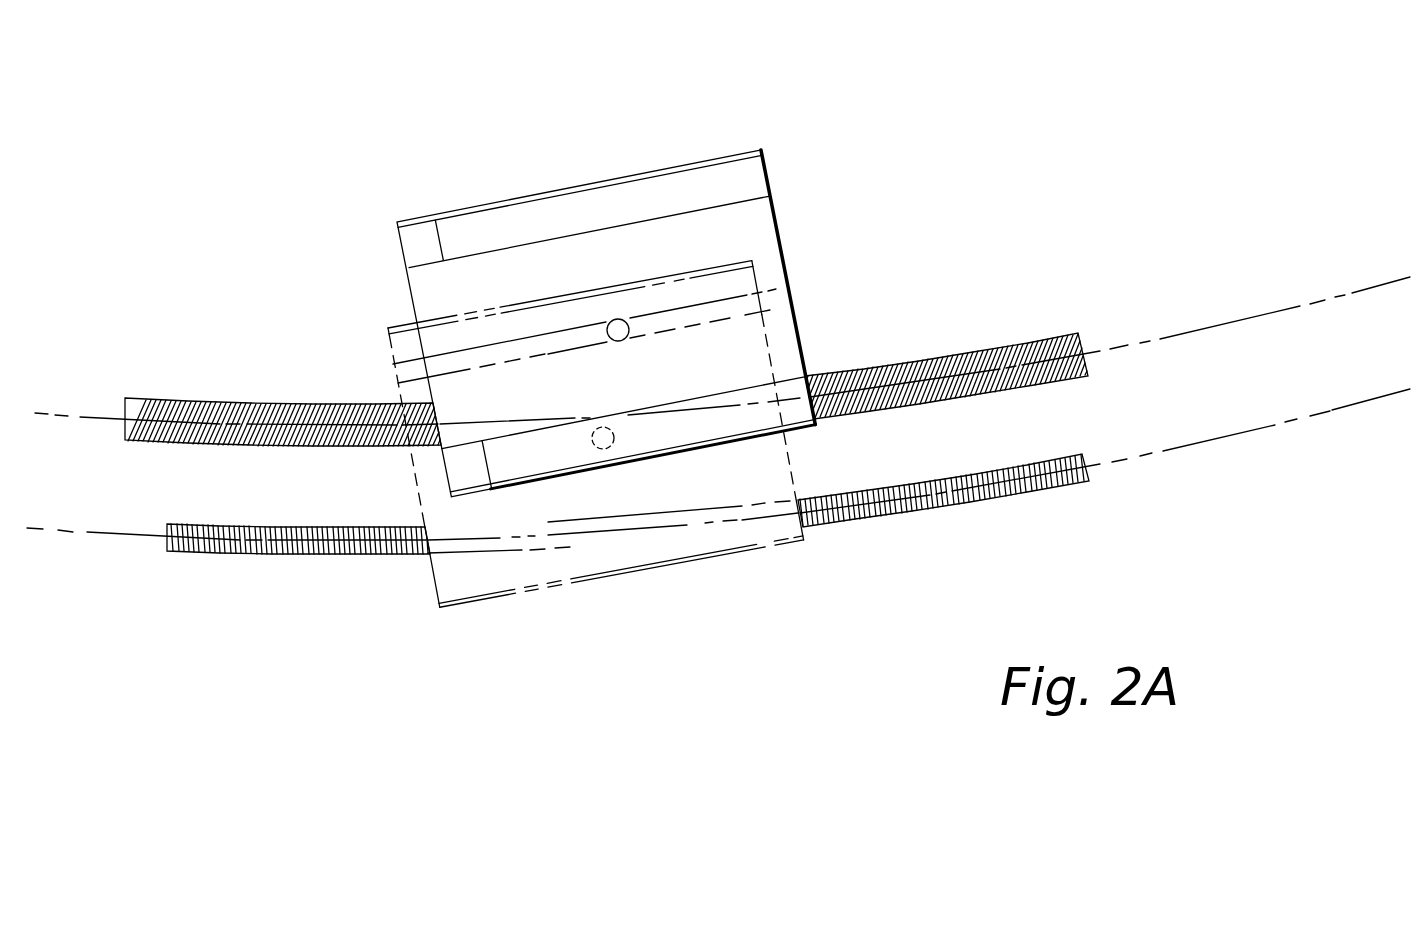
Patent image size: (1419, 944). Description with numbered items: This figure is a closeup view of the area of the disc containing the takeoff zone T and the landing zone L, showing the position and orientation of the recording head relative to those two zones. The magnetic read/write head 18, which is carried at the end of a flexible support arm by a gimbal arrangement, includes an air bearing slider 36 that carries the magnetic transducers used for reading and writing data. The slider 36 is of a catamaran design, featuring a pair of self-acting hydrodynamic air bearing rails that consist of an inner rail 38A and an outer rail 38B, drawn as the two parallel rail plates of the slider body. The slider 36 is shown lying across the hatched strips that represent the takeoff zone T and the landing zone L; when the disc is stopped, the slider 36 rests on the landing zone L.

The magnetic read/write head 18 is at (619, 106).
The air bearing slider 36 is at (774, 206).
The inner rail 38A is at (553, 190).
The outer rail 38B is at (697, 425).
The landing zone L is at (932, 358).
The takeoff zone T is at (982, 500).